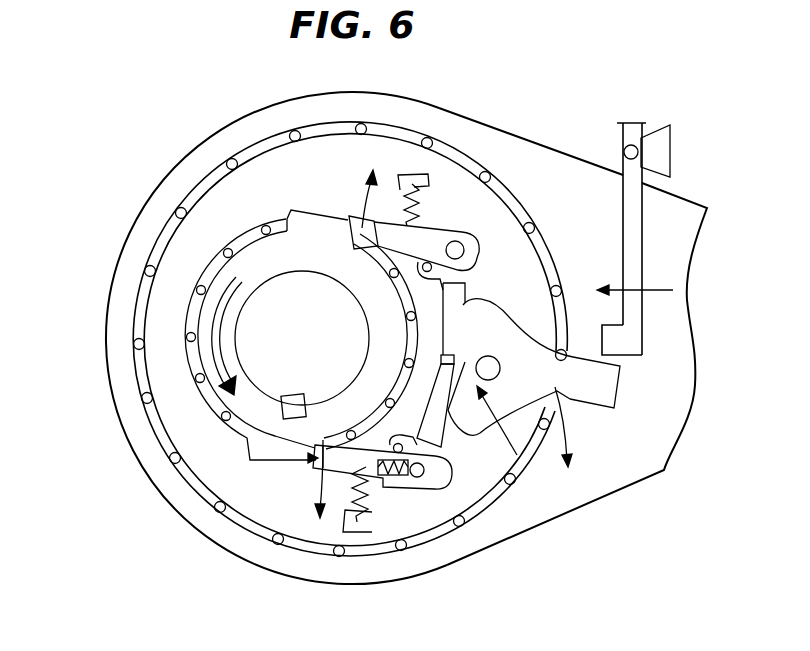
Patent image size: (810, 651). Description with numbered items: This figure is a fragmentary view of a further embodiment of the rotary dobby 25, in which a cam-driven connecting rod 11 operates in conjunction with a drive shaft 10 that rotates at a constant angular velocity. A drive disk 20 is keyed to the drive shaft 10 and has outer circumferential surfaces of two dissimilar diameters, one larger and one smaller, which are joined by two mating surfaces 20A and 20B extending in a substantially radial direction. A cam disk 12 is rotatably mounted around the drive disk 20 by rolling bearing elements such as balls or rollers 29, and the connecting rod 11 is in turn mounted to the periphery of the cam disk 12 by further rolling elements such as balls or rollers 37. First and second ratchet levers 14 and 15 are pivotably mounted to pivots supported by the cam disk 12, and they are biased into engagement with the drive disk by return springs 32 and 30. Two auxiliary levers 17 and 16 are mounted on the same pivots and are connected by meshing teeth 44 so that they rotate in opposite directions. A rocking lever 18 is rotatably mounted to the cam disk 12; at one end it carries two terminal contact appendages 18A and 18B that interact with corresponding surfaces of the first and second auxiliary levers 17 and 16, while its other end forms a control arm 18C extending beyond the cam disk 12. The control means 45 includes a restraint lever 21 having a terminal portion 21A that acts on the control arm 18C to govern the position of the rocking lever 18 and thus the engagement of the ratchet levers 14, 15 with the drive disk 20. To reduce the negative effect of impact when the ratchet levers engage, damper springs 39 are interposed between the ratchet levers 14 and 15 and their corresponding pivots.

The drive shaft 10 is at (263, 323).
The connecting rod 11 is at (672, 237).
The cam disk 12 is at (293, 518).
The first ratchet lever 14 is at (378, 474).
The second ratchet lever 15 is at (437, 242).
The second auxiliary lever 16 is at (474, 277).
The first auxiliary lever 17 is at (455, 420).
The rocking lever 18 is at (584, 290).
The terminal contact appendage 18A is at (438, 417).
The terminal contact appendage 18B is at (459, 310).
The control arm 18C is at (624, 409).
The drive disk 20 is at (257, 257).
The mating surface 20A is at (345, 232).
The mating surface 20B is at (347, 427).
The restraint lever 21 is at (638, 130).
The terminal portion 21A is at (652, 348).
The rotary dobby 25 is at (136, 506).
The rolling bearing elements 29 is at (197, 380).
The return spring 30 is at (400, 174).
The return spring 32 is at (360, 533).
The rolling elements 37 is at (220, 508).
The damper spring 39 is at (404, 478).
The meshing teeth 44 is at (440, 447).
The control means 45 is at (681, 143).